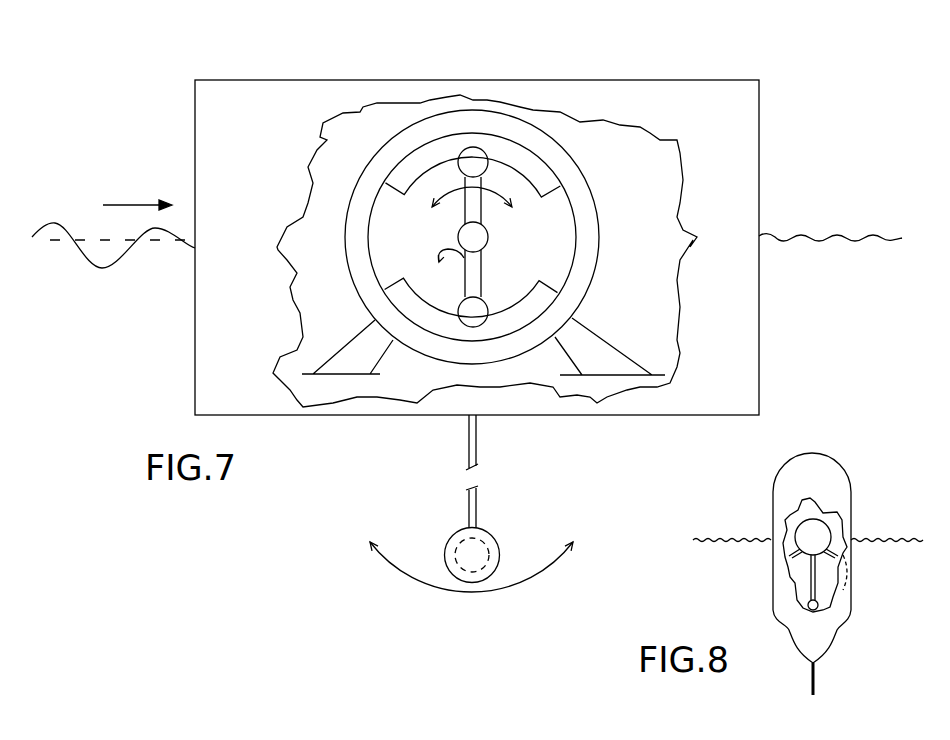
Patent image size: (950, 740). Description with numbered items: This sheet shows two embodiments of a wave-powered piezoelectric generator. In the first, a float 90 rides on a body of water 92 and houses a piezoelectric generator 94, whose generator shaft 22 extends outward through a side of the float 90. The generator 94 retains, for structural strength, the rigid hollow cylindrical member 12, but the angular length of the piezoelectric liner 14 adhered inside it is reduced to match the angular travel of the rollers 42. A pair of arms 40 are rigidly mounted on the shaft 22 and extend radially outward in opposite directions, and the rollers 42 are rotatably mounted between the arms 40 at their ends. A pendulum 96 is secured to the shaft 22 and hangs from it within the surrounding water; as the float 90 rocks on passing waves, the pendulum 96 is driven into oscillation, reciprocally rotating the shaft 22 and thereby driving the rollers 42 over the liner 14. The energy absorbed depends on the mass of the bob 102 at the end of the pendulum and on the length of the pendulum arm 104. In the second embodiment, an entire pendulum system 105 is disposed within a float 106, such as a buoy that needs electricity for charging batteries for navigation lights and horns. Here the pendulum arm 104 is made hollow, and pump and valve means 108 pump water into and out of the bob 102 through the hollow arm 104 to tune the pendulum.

In FIG. 7, the hollow circular cylindrical member 12 is at (588, 221).
In FIG. 7, the layer of flexible piezoelectric material 14 is at (530, 181).
In FIG. 7, the shaft 22 is at (486, 241).
In FIG. 7, the arms 40 is at (448, 267).
In FIG. 7, the rollers 42 is at (454, 210).
In FIG. 7, the float 90 is at (730, 128).
In FIG. 7, the body of water 92 is at (793, 238).
In FIG. 7, the piezoelectric generator 94 is at (560, 140).
In FIG. 7, the pendulum 96 is at (477, 513).
In FIG. 7, the bob 102 is at (447, 548).
In FIG. 8, the bob 102 is at (824, 607).
In FIG. 7, the pendulum arm 104 is at (475, 443).
In FIG. 8, the pendulum arm 104 is at (808, 573).
In FIG. 8, the pendulum system 105 is at (812, 530).
In FIG. 8, the float 106 is at (847, 470).
In FIG. 8, the pump and valve means 108 is at (847, 577).